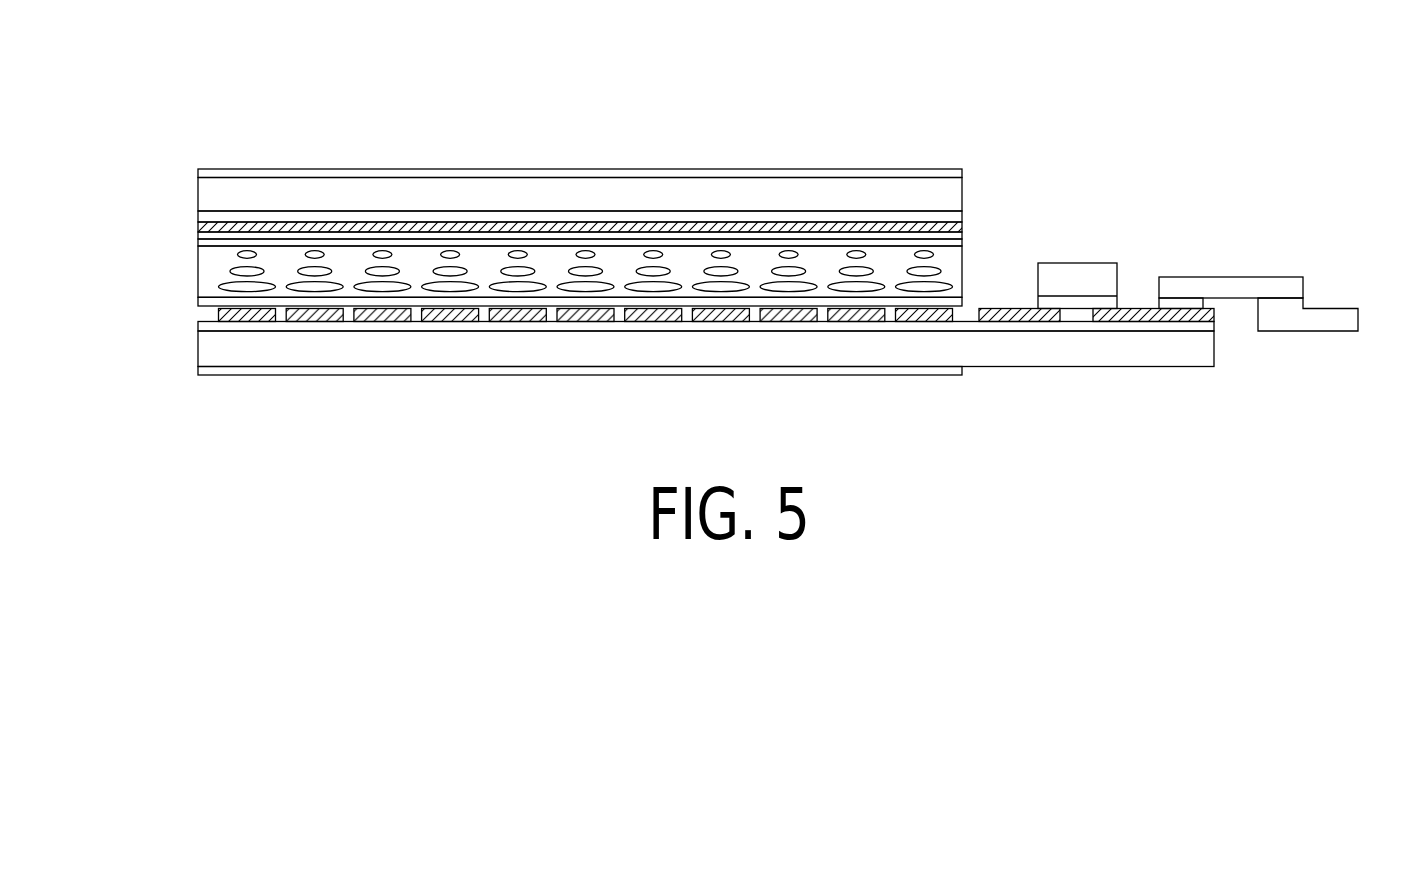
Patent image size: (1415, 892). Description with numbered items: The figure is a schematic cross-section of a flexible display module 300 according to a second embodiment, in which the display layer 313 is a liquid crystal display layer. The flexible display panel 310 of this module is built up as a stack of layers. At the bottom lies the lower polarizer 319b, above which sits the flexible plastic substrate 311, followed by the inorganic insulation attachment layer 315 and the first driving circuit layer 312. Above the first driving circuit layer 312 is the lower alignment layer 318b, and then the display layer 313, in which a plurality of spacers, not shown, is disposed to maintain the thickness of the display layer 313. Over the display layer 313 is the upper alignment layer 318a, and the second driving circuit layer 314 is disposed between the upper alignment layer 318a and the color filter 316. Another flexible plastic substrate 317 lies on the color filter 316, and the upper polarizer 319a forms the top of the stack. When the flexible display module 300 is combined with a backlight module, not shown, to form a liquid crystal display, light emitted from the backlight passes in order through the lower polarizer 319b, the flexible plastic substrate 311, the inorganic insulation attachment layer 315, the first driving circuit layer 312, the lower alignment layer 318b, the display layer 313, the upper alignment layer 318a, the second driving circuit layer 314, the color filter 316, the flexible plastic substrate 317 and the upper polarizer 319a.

The flexible display module 300 is at (1397, 448).
The flexible display panel 310 is at (107, 52).
The flexible plastic substrate 311 is at (199, 353).
The first driving circuit layer 312 is at (189, 317).
The display layer 313 is at (184, 254).
The second driving circuit layer 314 is at (191, 229).
The inorganic insulation attachment layer 315 is at (199, 325).
The color filter 316 is at (207, 217).
The flexible plastic substrate 317 is at (207, 192).
The upper alignment layer 318a is at (197, 240).
The lower alignment layer 318b is at (197, 302).
The upper polarizer 319a is at (217, 173).
The lower polarizer 319b is at (205, 372).